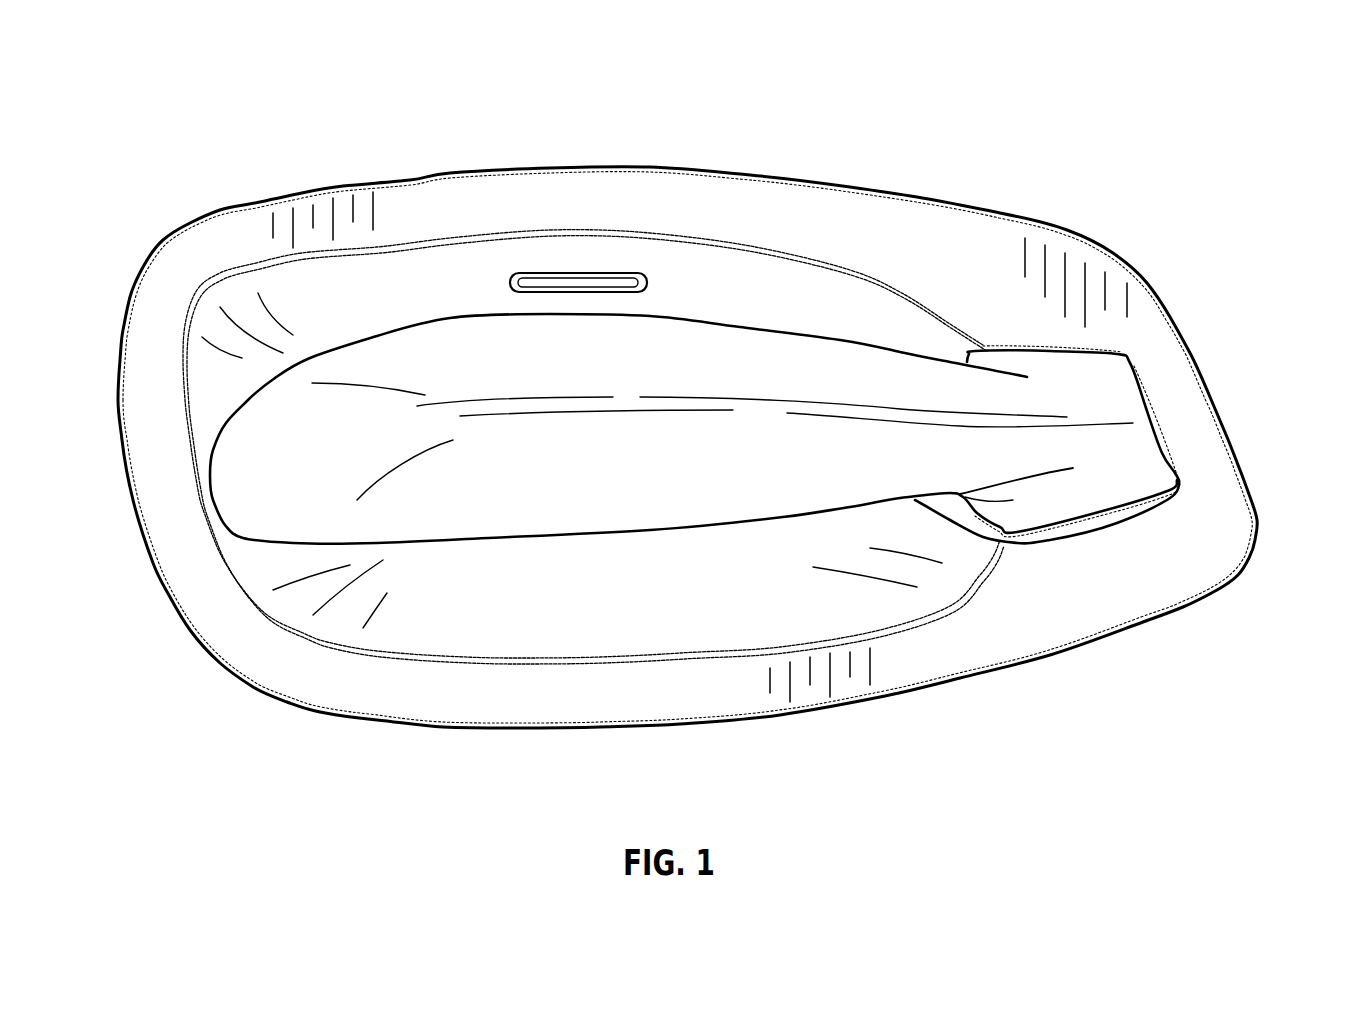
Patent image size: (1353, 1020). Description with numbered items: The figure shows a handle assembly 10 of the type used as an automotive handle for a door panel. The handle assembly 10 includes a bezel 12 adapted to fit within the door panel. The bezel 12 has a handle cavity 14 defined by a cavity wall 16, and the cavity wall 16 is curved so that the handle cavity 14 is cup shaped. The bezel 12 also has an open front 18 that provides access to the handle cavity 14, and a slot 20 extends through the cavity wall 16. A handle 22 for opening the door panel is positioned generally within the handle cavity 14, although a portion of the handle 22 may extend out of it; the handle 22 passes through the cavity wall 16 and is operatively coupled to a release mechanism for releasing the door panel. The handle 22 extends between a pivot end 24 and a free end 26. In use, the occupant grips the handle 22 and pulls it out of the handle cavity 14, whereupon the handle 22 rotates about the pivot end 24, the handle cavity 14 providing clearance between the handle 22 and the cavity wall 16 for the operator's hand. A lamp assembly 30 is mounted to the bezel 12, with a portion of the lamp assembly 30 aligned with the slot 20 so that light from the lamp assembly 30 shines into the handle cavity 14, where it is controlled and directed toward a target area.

The handle assembly 10 is at (253, 82).
The bezel 12 is at (818, 203).
The handle cavity 14 is at (692, 633).
The cavity wall 16 is at (497, 620).
The open front 18 is at (233, 598).
The slot 20 is at (557, 256).
The handle 22 is at (293, 413).
The pivot end 24 is at (1160, 468).
The free end 26 is at (243, 510).
The lamp assembly 30 is at (604, 265).